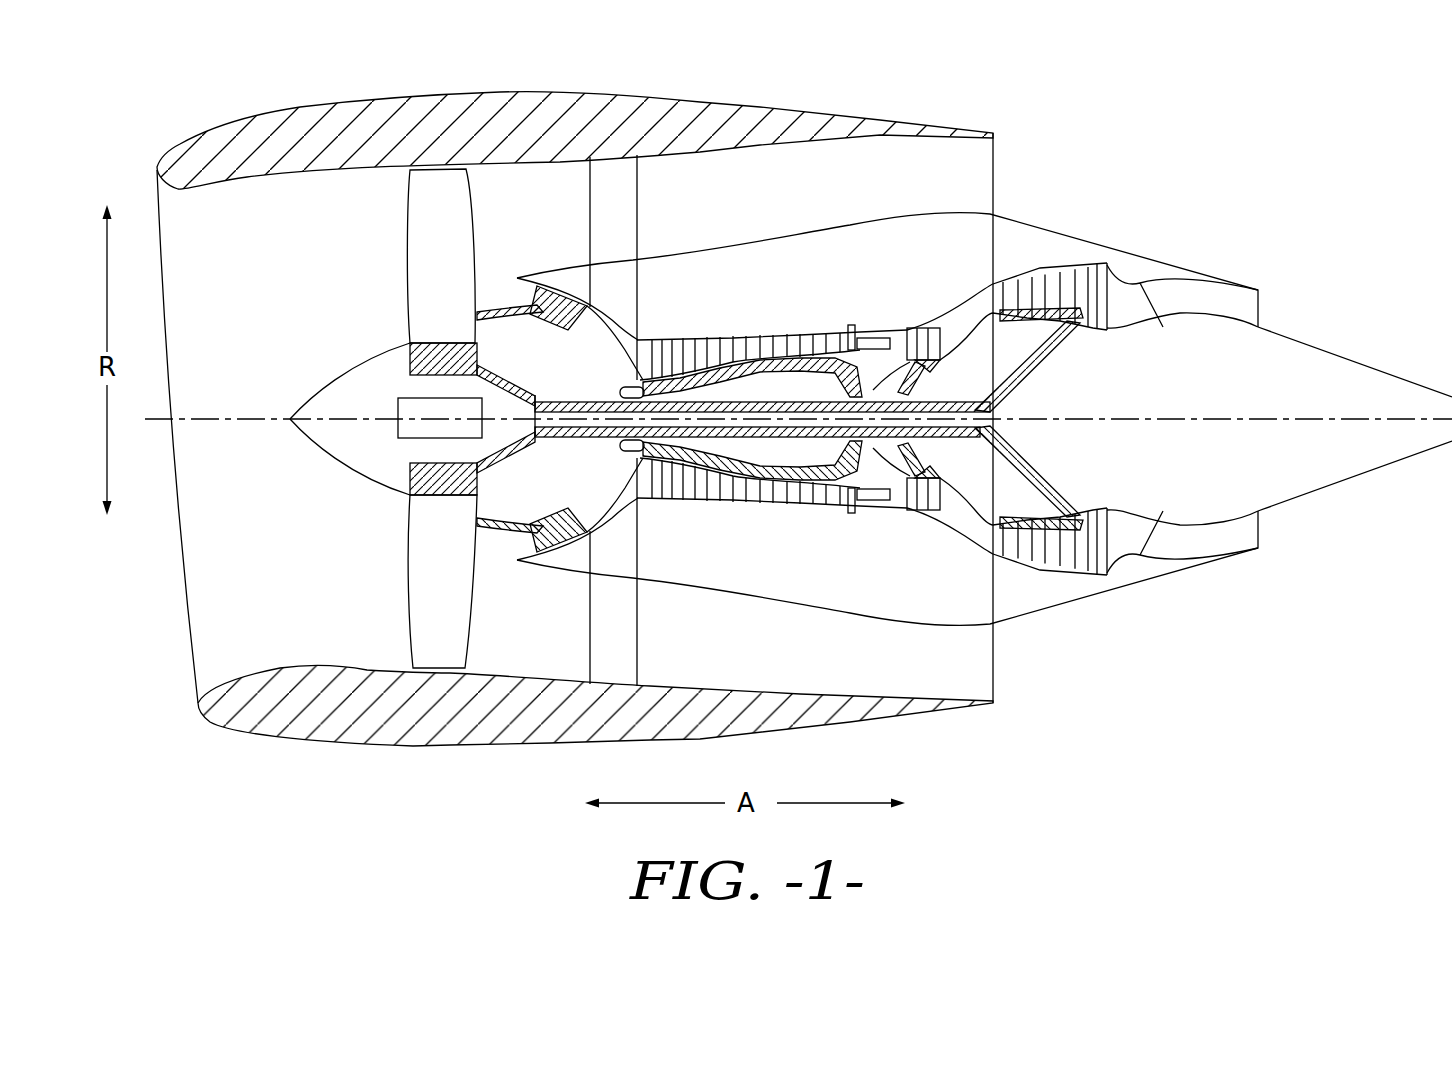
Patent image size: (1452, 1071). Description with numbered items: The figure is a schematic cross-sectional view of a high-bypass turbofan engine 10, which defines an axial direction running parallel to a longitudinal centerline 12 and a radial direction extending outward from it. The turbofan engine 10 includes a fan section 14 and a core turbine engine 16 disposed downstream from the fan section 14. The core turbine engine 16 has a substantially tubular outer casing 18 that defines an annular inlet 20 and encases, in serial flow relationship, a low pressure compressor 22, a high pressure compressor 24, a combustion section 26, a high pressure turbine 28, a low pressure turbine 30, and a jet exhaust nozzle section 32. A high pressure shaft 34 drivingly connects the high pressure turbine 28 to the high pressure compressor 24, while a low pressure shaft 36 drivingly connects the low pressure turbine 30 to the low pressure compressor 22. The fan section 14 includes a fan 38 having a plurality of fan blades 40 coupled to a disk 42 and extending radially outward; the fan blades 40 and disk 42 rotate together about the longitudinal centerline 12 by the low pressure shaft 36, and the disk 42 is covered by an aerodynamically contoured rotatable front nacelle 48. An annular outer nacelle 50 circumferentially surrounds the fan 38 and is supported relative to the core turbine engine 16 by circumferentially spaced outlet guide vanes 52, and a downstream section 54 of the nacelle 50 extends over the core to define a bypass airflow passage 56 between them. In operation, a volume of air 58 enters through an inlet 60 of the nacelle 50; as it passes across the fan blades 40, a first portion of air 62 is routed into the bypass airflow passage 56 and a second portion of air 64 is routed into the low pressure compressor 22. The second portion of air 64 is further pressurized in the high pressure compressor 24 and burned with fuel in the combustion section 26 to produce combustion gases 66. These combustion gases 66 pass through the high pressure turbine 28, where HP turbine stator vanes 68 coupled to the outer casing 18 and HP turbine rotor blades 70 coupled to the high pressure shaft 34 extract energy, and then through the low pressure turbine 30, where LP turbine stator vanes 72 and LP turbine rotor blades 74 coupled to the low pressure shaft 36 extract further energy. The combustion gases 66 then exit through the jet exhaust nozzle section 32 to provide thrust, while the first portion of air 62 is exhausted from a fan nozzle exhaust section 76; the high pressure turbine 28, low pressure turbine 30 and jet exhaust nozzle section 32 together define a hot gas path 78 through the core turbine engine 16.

The turbofan engine 10 is at (1289, 128).
The longitudinal centerline 12 is at (1175, 412).
The fan section 14 is at (483, 63).
The core turbine engine 16 is at (812, 280).
The outer casing 18 is at (833, 617).
The annular inlet 20 is at (516, 551).
The low pressure compressor 22 is at (590, 513).
The high pressure compressor 24 is at (668, 497).
The combustion section 26 is at (870, 500).
The high pressure turbine 28 is at (960, 507).
The low pressure turbine 30 is at (1093, 573).
The jet exhaust nozzle section 32 is at (1262, 297).
The high pressure shaft 34 is at (918, 362).
The low pressure shaft 36 is at (590, 395).
The fan 38 is at (384, 261).
The fan blades 40 is at (403, 612).
The disk 42 is at (407, 352).
The rotatable front nacelle 48 is at (327, 387).
The outer nacelle 50 is at (478, 747).
The outlet guide vanes 52 is at (637, 178).
The downstream section of nacelle 54 is at (802, 110).
The bypass airflow passage 56 is at (785, 201).
The volume of air 58 is at (147, 418).
The inlet 60 is at (192, 658).
The first portion of air 62 is at (506, 207).
The second portion of air 64 is at (575, 311).
The combustion gases 66 is at (1037, 280).
The HP turbine stator vanes 68 is at (910, 517).
The HP turbine rotor blades 70 is at (923, 510).
The LP turbine stator vanes 72 is at (998, 543).
The LP turbine rotor blades 74 is at (1013, 550).
The fan nozzle exhaust section 76 is at (995, 152).
The hot gas path 78 is at (975, 294).